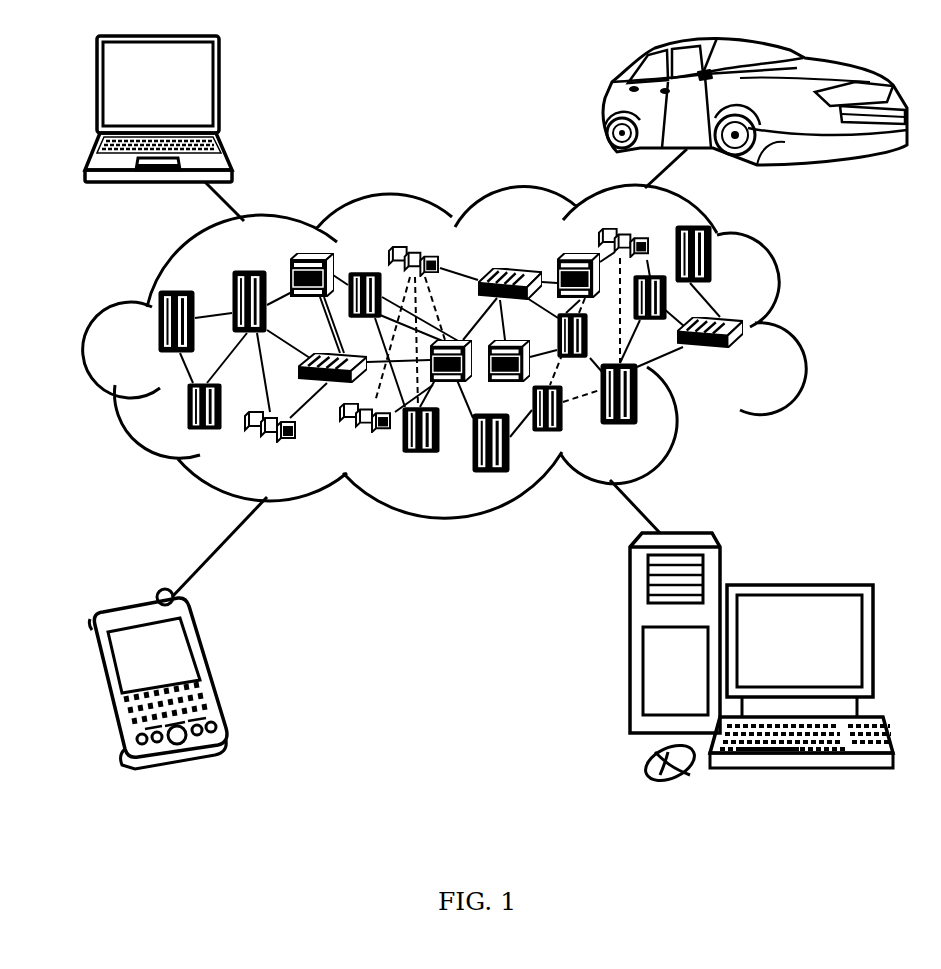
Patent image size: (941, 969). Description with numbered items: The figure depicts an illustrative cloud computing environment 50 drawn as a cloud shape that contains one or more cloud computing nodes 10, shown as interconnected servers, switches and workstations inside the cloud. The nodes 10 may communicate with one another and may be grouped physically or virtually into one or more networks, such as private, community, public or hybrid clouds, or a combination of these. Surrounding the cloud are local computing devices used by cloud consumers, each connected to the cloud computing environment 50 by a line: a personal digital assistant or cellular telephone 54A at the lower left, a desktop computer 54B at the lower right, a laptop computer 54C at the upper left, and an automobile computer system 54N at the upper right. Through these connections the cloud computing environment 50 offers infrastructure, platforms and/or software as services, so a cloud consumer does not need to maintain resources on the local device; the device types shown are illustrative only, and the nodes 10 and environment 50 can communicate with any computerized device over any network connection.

The cloud computing nodes 10 is at (495, 412).
The cloud computing environment 50 is at (802, 327).
The personal digital assistant (PDA) or cellular telephone 54A is at (210, 667).
The desktop computer 54B is at (800, 585).
The laptop computer 54C is at (219, 90).
The automobile computer system 54N is at (600, 105).